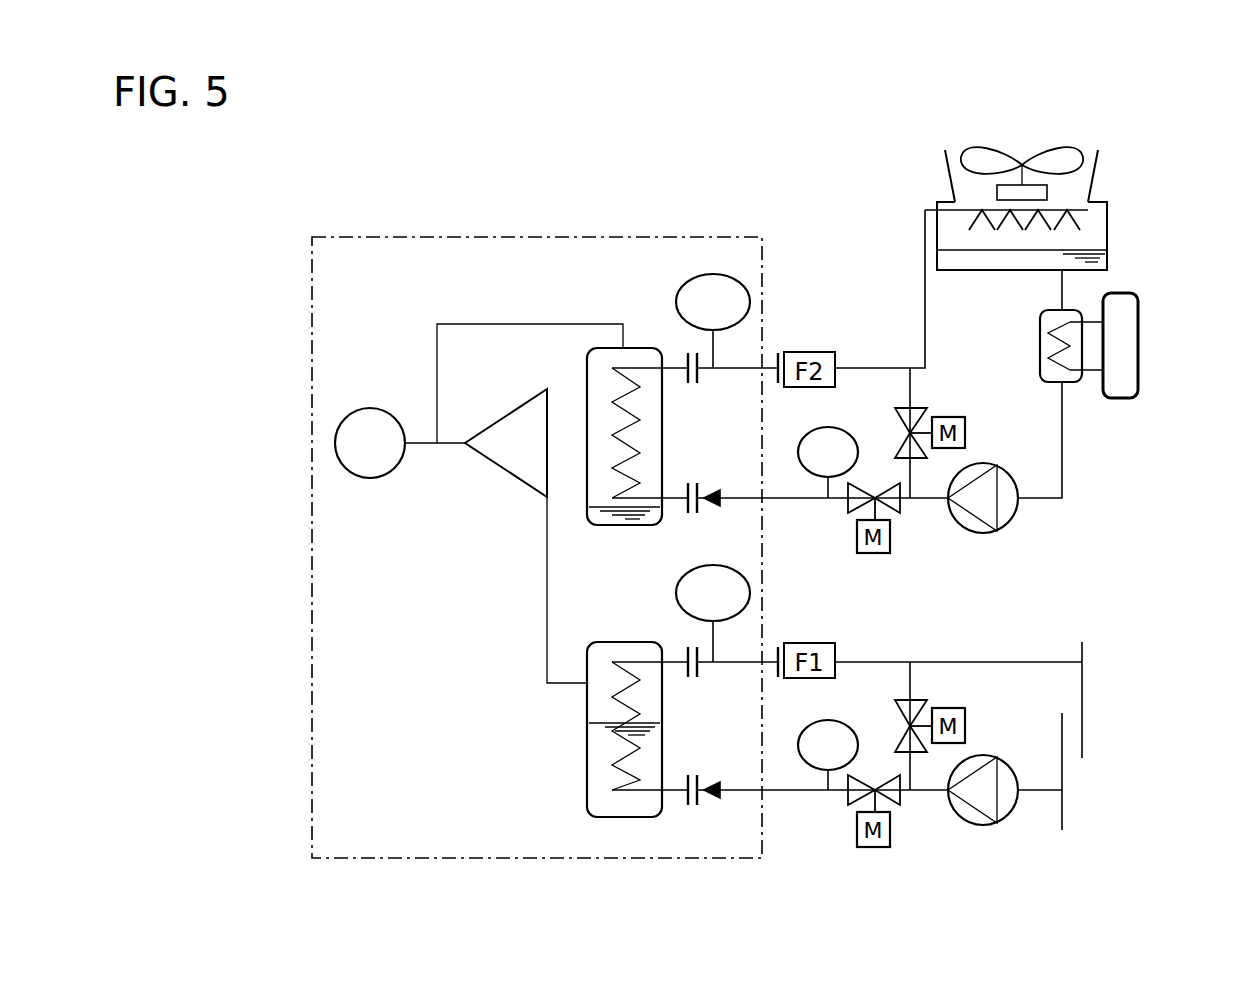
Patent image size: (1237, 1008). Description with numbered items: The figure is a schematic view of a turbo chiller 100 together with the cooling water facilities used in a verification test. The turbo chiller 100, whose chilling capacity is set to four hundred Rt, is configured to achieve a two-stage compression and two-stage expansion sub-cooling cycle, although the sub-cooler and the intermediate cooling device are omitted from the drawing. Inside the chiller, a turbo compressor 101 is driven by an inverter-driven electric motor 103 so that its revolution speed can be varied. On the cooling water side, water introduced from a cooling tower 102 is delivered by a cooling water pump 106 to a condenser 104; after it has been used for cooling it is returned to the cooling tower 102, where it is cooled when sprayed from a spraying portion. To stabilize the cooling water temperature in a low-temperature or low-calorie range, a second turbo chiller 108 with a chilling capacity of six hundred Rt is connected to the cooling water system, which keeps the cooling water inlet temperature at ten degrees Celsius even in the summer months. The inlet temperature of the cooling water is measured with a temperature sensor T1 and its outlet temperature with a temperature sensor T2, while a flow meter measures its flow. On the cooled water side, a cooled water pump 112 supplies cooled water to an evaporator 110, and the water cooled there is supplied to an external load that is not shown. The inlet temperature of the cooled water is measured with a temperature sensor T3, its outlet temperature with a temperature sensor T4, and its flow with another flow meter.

The turbo chiller 100 is at (366, 193).
The turbo compressor 101 is at (503, 470).
The cooling tower 102 is at (897, 142).
The electric motor 103 is at (370, 408).
The condenser 104 is at (640, 348).
The cooling water pump 106 is at (985, 463).
The turbo chiller 108 is at (1172, 352).
The evaporator 110 is at (587, 757).
The cooled water pump 112 is at (985, 755).
The temperature sensor T1 is at (840, 432).
The temperature sensor T2 is at (748, 290).
The temperature sensor T3 is at (840, 724).
The temperature sensor T4 is at (676, 592).